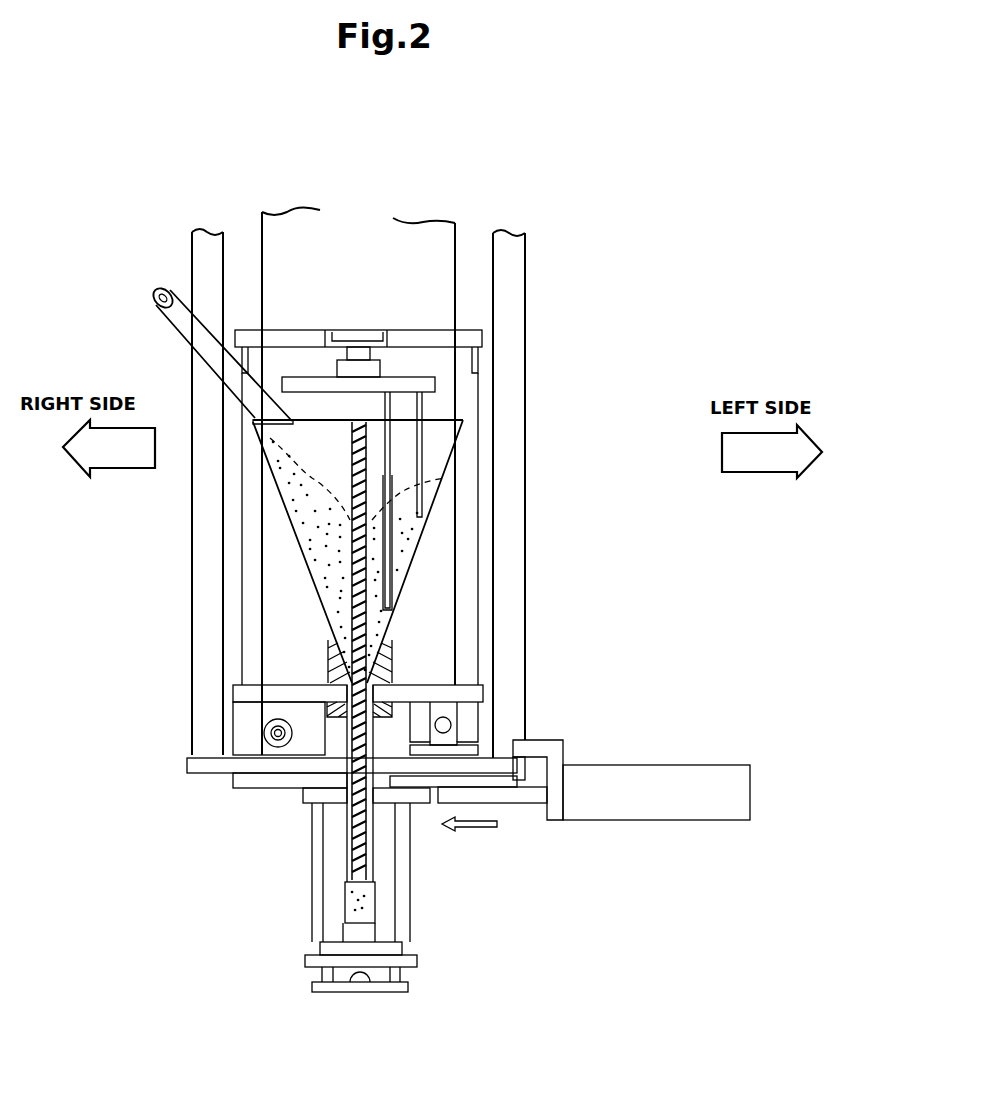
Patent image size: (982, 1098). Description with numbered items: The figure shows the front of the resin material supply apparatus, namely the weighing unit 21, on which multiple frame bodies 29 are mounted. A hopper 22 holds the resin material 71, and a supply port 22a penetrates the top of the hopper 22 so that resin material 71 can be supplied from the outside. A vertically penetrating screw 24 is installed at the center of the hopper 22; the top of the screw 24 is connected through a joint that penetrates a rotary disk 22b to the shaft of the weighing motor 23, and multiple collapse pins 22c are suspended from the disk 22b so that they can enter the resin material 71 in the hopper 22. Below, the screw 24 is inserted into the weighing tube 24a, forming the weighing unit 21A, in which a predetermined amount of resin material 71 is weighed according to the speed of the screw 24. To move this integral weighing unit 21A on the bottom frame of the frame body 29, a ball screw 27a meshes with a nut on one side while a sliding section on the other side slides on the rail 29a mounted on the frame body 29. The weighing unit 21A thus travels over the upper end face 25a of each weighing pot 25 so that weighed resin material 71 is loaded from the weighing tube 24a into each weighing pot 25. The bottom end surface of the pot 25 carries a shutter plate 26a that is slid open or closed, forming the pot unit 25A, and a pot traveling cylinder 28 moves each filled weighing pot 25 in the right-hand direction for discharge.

The weighing unit 21 is at (612, 215).
The weighing unit 21A is at (613, 559).
The hopper 22 is at (282, 500).
The supply port 22a is at (155, 290).
The rotary disk 22b is at (435, 383).
The collapse pins 22c is at (385, 475).
The weighing motor 23 is at (377, 222).
The screw 24 is at (351, 535).
The weighing tube 24a is at (347, 817).
The weighing pot 25 is at (345, 913).
The upper end face 25a is at (381, 882).
The pot unit 25A is at (548, 955).
The shutter plate 26a is at (370, 972).
The ball screw 27a is at (264, 733).
The pot traveling cylinder 28 is at (643, 820).
The frame body 29 is at (515, 525).
The rail 29a is at (482, 740).
The resin material 71 is at (330, 580).